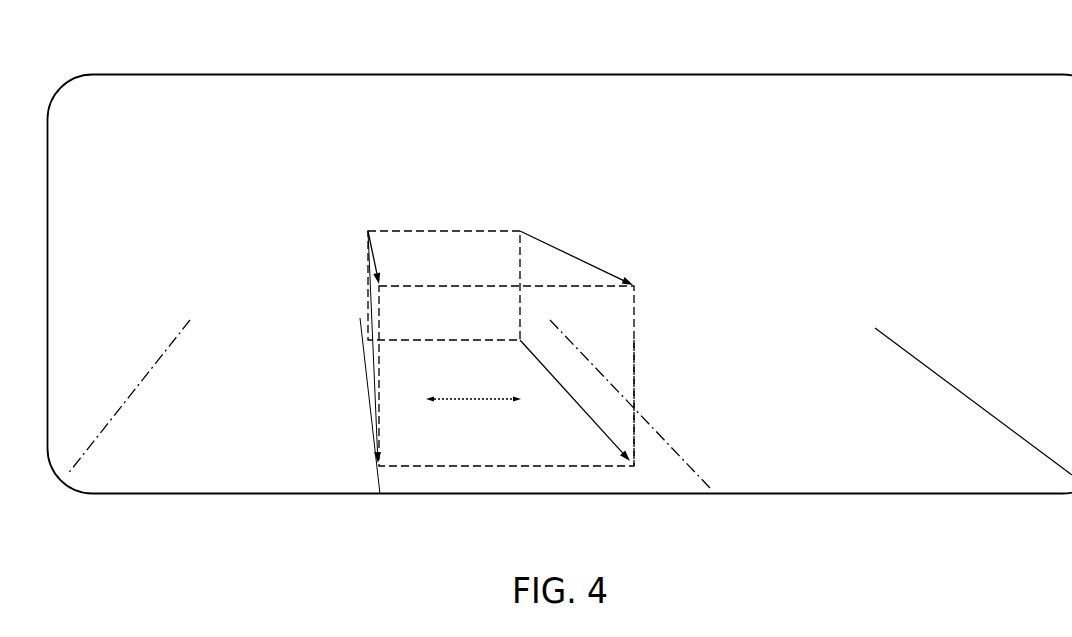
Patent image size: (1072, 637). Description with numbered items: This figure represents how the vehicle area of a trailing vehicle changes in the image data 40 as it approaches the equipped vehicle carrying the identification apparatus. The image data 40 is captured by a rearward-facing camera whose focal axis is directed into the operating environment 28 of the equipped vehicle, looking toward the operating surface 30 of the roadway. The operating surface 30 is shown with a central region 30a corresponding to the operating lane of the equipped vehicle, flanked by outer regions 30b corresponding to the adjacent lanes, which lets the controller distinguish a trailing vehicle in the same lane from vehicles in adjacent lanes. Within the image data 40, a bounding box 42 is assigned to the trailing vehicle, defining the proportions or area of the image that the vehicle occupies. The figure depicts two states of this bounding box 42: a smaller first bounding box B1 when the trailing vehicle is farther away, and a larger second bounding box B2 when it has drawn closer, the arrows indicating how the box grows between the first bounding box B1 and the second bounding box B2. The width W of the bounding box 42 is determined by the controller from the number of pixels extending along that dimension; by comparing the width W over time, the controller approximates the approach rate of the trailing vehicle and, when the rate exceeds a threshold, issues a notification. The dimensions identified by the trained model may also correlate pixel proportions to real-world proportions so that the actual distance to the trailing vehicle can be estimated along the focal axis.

The operating environment 28 is at (688, 139).
The image data 40 is at (940, 74).
The bounding box 42 is at (479, 285).
The operating surface 30 is at (569, 396).
The operating surface (operating lane portion) 30a is at (657, 473).
The operating surface (adjacent lane portion) 30b is at (148, 398).
The first bounding box B1 is at (368, 307).
The second bounding box B2 is at (635, 370).
The width W is at (473, 387).